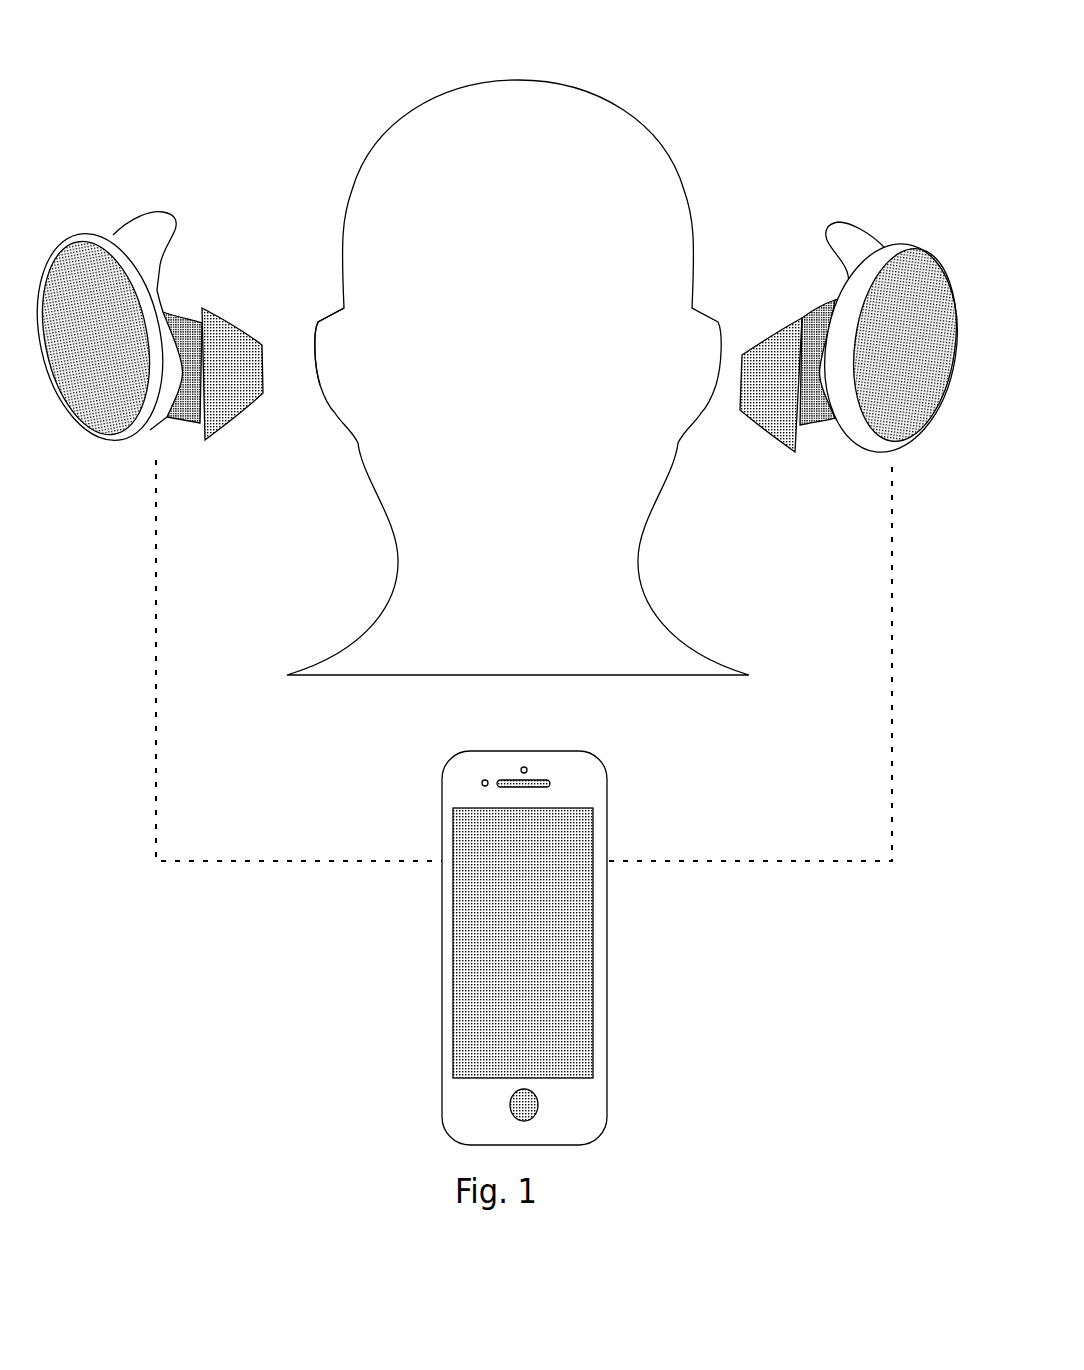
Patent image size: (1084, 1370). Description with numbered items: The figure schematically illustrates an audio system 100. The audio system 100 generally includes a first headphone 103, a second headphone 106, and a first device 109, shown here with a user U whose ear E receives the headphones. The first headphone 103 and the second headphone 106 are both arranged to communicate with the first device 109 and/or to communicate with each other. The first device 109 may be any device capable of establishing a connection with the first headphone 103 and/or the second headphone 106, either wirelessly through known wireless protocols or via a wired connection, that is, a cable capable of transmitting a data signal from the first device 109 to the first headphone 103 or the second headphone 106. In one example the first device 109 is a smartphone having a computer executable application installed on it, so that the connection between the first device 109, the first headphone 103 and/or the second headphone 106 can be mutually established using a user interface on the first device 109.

The audio system 100 is at (715, 123).
The user U is at (383, 97).
The ear E is at (323, 318).
The first headphone 103 is at (83, 232).
The second headphone 106 is at (917, 243).
The first device 109 is at (607, 792).